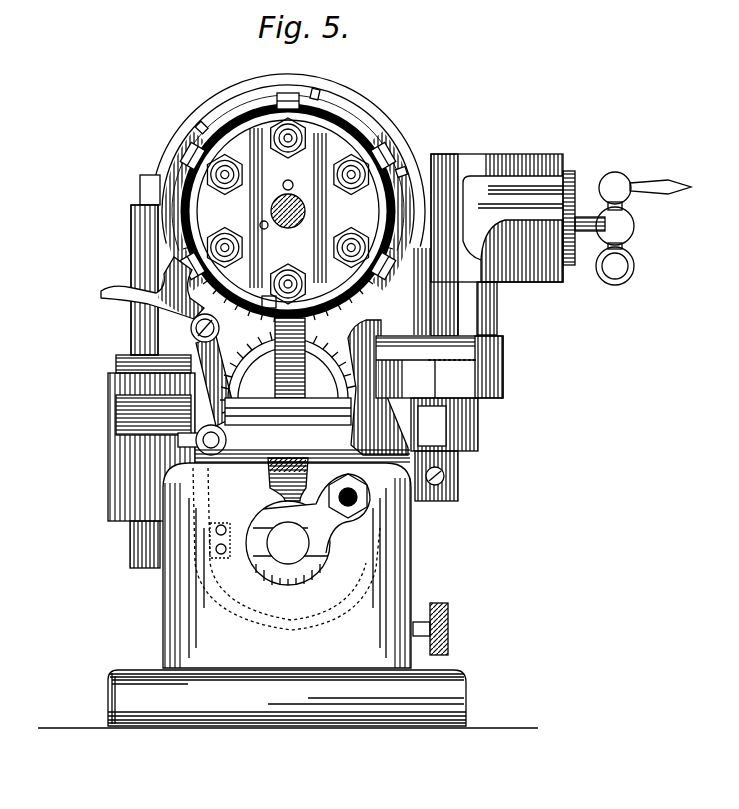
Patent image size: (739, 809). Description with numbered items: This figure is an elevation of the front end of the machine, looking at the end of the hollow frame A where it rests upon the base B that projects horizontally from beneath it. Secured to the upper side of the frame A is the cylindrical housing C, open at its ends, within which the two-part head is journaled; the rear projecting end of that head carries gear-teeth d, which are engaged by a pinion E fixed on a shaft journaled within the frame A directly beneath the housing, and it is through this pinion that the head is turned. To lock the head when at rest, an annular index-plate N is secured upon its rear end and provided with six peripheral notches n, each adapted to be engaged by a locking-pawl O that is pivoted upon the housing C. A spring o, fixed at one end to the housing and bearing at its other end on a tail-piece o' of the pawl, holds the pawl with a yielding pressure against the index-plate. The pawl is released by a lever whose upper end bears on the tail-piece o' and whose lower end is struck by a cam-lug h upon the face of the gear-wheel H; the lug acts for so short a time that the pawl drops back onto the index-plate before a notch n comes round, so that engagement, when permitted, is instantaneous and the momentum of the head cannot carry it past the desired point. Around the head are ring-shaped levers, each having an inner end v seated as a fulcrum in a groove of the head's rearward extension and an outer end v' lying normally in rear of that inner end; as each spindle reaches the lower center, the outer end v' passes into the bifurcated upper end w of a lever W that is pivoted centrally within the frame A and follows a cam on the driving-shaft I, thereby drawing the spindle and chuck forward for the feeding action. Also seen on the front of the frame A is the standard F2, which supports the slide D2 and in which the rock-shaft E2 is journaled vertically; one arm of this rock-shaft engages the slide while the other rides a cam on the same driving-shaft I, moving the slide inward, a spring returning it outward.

The cylindrical housing C is at (294, 188).
The annular plate N is at (233, 92).
The outer end of lever V v' is at (285, 167).
The peripheral notches n is at (309, 83).
The inner end of lever V v is at (262, 293).
The slide D2 is at (567, 171).
The locking-pawl O is at (150, 301).
The tail-piece o' is at (138, 364).
The cylindrical boss P is at (175, 402).
The spring o is at (159, 443).
The bifurcated upper end w is at (287, 373).
The pinion E is at (299, 358).
The lever W is at (276, 398).
The gear-teeth d is at (420, 352).
The standard F2 is at (494, 367).
The rock-shaft E2 is at (430, 493).
The hollow frame A is at (406, 562).
The driving-shaft I is at (308, 529).
The cam-lug h is at (210, 553).
The gear-wheel H is at (286, 556).
The base B is at (288, 707).